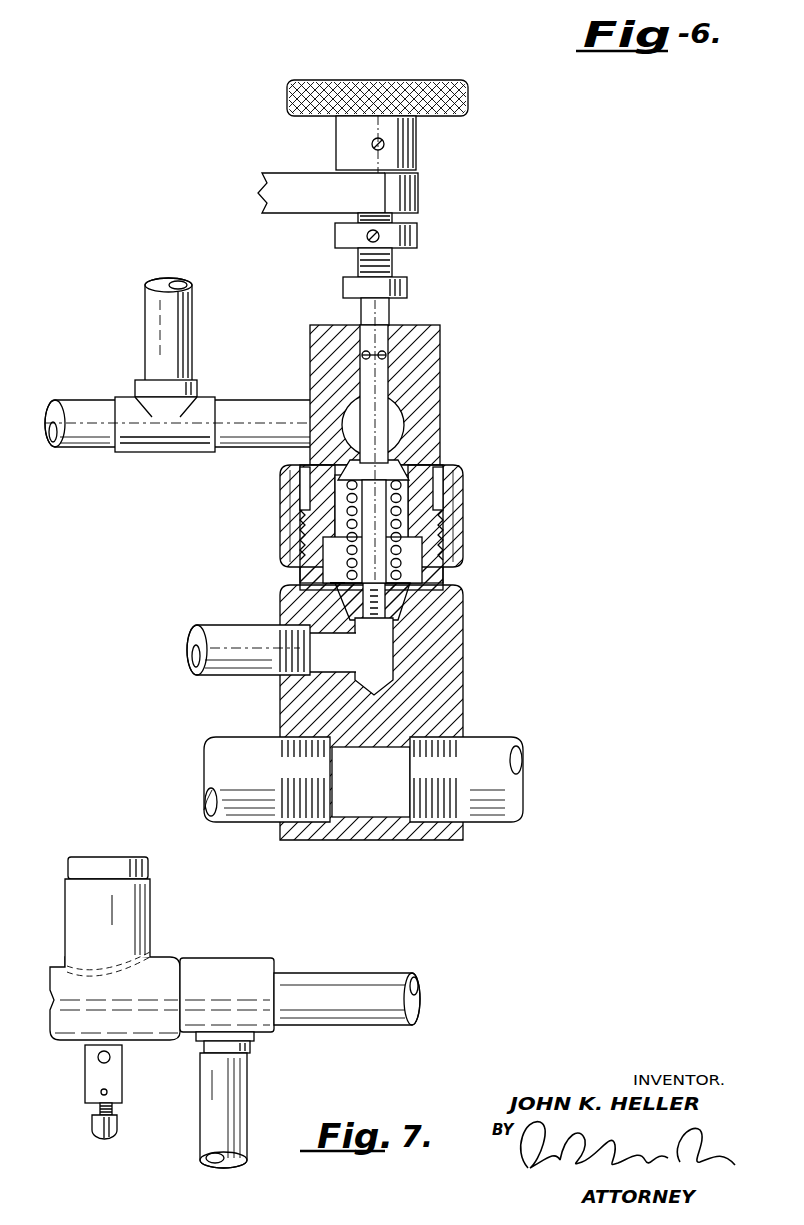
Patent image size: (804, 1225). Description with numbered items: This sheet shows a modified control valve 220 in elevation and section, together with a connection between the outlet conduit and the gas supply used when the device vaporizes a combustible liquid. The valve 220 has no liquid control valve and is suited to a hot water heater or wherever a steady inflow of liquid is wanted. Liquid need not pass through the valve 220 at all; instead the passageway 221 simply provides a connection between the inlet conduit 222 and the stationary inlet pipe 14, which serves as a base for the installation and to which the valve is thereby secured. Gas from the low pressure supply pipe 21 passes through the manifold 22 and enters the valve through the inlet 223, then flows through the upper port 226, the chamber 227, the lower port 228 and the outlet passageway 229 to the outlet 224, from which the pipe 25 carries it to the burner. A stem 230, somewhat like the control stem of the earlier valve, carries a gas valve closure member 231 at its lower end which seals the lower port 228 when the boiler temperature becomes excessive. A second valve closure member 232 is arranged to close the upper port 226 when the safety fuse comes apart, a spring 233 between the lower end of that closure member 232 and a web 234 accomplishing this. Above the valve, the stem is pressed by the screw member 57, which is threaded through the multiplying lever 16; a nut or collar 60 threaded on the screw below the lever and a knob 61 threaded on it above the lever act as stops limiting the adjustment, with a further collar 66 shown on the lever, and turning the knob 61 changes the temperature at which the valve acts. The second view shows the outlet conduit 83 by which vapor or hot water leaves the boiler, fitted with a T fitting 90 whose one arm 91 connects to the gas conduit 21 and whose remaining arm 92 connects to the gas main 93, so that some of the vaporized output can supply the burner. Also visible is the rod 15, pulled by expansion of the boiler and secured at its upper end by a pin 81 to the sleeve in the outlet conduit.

In FIG. 6, the knob 61 is at (440, 80).
In FIG. 6, the multiplying lever 16 is at (265, 196).
In FIG. 6, the collar 66 is at (420, 196).
In FIG. 6, the nut or collar 60 is at (420, 238).
In FIG. 6, the screw member 57 is at (393, 270).
In FIG. 6, the stem 230 is at (390, 320).
In FIG. 6, the low pressure gas supply pipe 21 is at (190, 330).
In FIG. 7, the low pressure gas supply pipe 21 is at (218, 1113).
In FIG. 6, the manifold 22 is at (210, 442).
In FIG. 6, the inlet 223 is at (396, 425).
In FIG. 6, the upper port 226 is at (406, 478).
In FIG. 6, the valve closure member 232 is at (412, 493).
In FIG. 6, the spring 233 is at (425, 523).
In FIG. 6, the chamber 227 is at (412, 551).
In FIG. 6, the web 234 is at (330, 580).
In FIG. 6, the outlet 224 is at (278, 640).
In FIG. 6, the gas valve closure member 231 is at (395, 607).
In FIG. 6, the lower port 228 is at (386, 616).
In FIG. 6, the pipe 25 is at (200, 648).
In FIG. 6, the outlet passageway 229 is at (380, 644).
In FIG. 6, the valve 220 is at (463, 692).
In FIG. 6, the inlet pipe 14 is at (222, 772).
In FIG. 6, the inlet conduit 222 is at (515, 790).
In FIG. 6, the passageway 221 is at (378, 805).
In FIG. 7, the outlet conduit 83 is at (62, 993).
In FIG. 7, the arm 92 is at (262, 972).
In FIG. 7, the gas main 93 is at (373, 981).
In FIG. 7, the T fitting 90 is at (258, 1040).
In FIG. 7, the arm 91 is at (238, 1045).
In FIG. 7, the pin 81 is at (98, 1057).
In FIG. 7, the rod 15 is at (98, 1129).